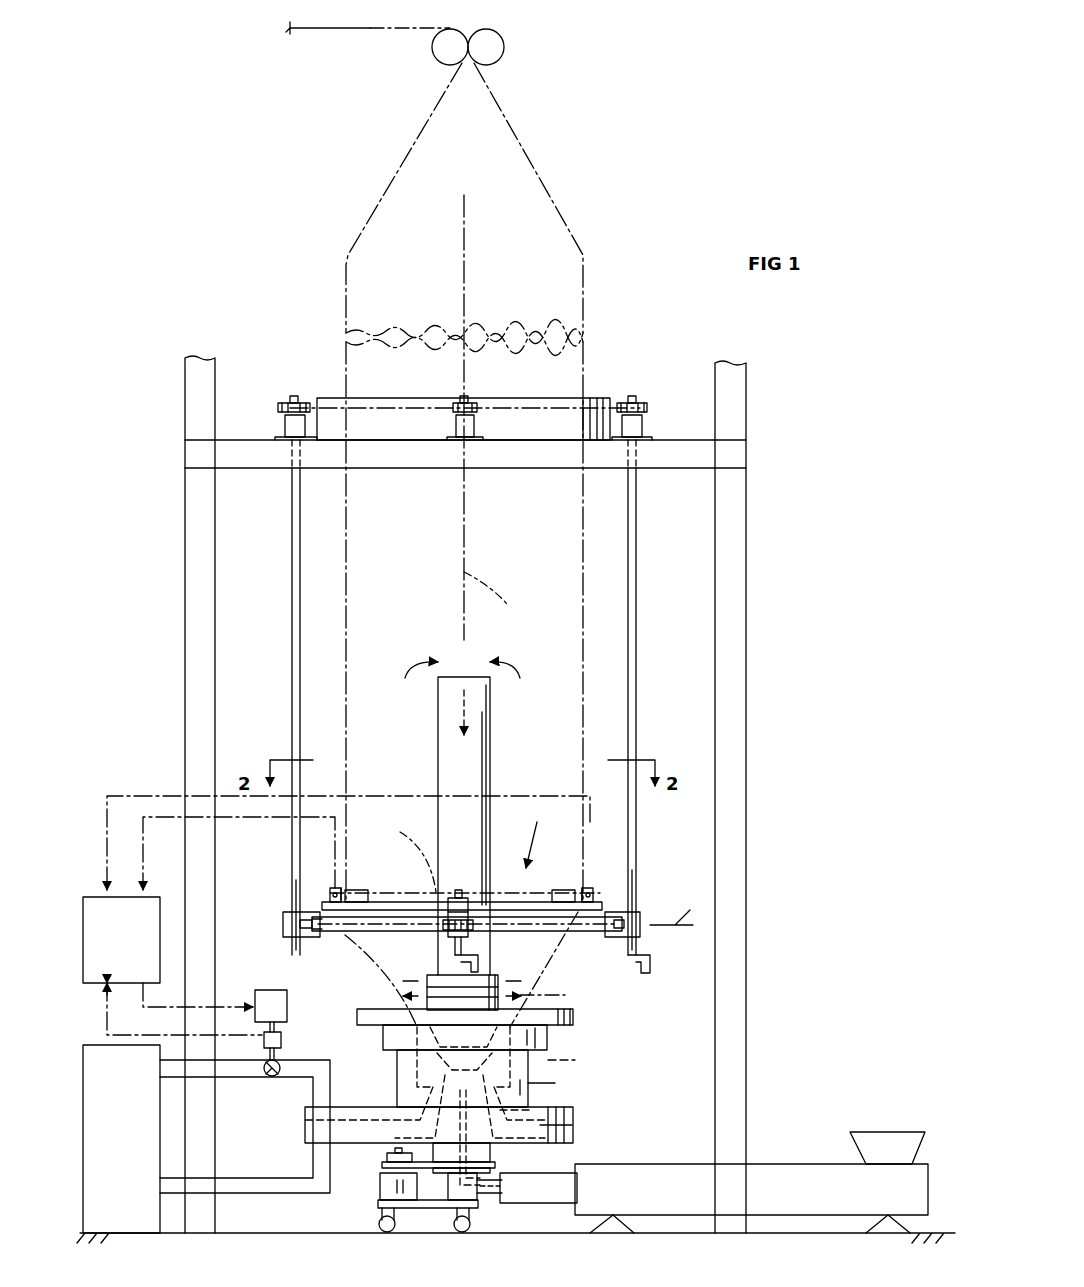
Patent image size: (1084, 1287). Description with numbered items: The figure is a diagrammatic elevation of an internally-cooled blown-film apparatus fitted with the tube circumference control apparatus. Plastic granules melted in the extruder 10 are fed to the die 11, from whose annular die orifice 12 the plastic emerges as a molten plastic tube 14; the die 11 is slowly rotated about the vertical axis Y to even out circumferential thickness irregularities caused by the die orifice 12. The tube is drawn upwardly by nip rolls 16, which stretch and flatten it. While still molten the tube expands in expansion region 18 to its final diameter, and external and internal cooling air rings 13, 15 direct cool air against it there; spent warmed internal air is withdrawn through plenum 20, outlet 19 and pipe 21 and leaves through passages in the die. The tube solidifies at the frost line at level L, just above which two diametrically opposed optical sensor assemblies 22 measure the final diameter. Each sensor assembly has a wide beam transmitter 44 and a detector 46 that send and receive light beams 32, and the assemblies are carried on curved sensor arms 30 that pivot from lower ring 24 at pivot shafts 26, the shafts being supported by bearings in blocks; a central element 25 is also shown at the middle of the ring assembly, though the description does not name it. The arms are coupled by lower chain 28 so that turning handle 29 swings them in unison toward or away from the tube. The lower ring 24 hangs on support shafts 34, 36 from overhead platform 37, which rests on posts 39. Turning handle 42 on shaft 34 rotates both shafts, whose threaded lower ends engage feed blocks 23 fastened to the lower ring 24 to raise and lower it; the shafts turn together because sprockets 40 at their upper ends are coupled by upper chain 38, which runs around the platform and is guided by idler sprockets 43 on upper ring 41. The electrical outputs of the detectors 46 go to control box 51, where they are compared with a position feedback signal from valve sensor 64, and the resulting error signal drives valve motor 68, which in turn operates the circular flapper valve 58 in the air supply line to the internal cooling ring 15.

The extruder 10 is at (642, 1162).
The die 11 is at (489, 1078).
The annular die orifice 12 is at (492, 1047).
The external cooling air ring 13 is at (575, 1016).
The molten plastic tube 14 is at (555, 995).
The internal cooling air ring 15 is at (425, 978).
The nip rolls 16 is at (432, 50).
The expansion region 18 is at (547, 972).
The outlet 19 is at (458, 668).
The plenum 20 is at (573, 1112).
The pipe 21 is at (440, 782).
The optical sensor assemblies 22 is at (471, 845).
The feed blocks 23 is at (283, 932).
The lower ring 24 is at (574, 932).
The pinion 25 is at (470, 926).
The pivot shafts 26 is at (455, 942).
The lower chain 28 is at (352, 932).
The handle 29 is at (480, 962).
The sensor arms 30 is at (398, 906).
The light beams 32 is at (342, 890).
The support shaft 34 is at (638, 890).
The support shaft 36 is at (290, 890).
The overhead platform 37 is at (244, 440).
The upper chain 38 is at (541, 412).
The posts 39 is at (188, 617).
The sprockets 40 is at (290, 403).
The upper ring 41 is at (390, 416).
The handle 42 is at (652, 962).
The idler sprockets 43 is at (456, 403).
The wide beam transmitter 44 is at (362, 890).
The detector 46 is at (332, 890).
The control box 51 is at (121, 940).
The circular flapper valve 58 is at (271, 1077).
The valve sensor 64 is at (282, 1040).
The valve motor 68 is at (270, 995).